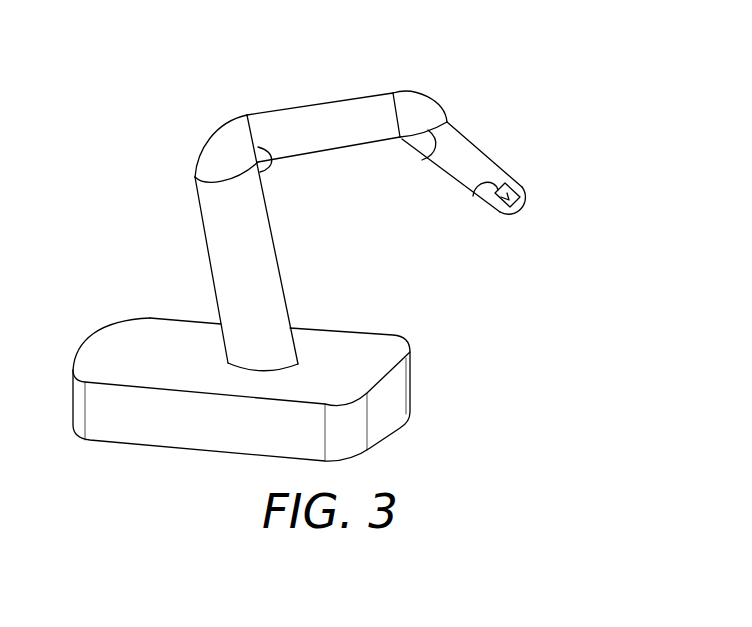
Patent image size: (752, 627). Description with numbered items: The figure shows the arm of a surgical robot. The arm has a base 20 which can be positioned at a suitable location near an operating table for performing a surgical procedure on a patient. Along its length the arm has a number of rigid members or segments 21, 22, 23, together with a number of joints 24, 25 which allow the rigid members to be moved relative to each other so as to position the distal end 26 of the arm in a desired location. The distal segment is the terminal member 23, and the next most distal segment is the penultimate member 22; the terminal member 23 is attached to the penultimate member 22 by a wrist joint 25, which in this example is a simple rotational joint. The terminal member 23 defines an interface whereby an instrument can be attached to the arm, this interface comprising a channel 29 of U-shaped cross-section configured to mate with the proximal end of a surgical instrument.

The base 20 is at (398, 386).
The rigid member 21 is at (218, 137).
The penultimate member 22 is at (472, 147).
The terminal member 23 is at (519, 186).
The joint 24 is at (212, 177).
The wrist joint 25 is at (473, 196).
The distal end 26 is at (528, 213).
The channel 29 is at (500, 212).